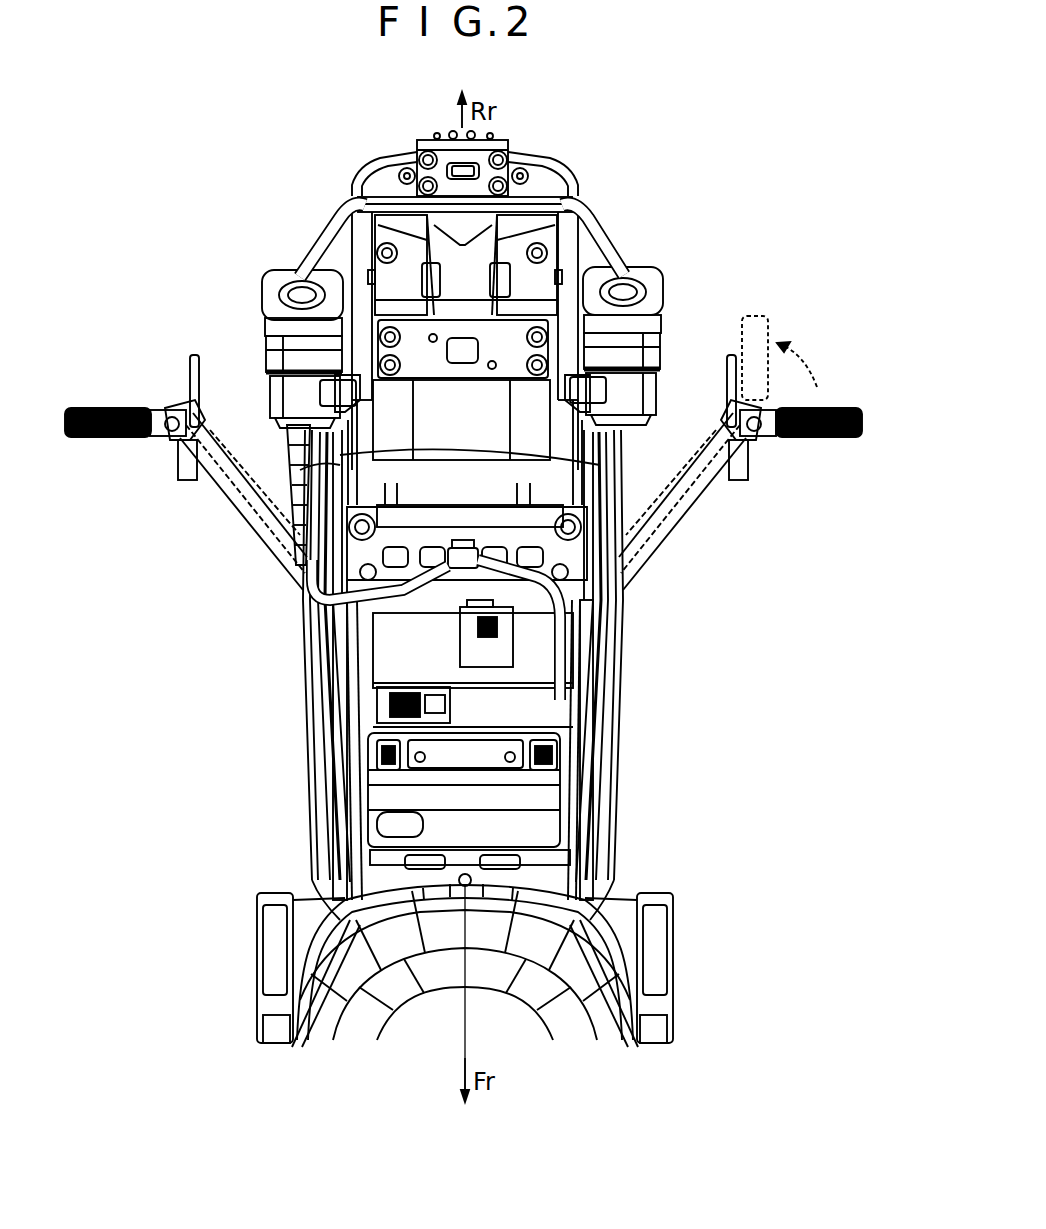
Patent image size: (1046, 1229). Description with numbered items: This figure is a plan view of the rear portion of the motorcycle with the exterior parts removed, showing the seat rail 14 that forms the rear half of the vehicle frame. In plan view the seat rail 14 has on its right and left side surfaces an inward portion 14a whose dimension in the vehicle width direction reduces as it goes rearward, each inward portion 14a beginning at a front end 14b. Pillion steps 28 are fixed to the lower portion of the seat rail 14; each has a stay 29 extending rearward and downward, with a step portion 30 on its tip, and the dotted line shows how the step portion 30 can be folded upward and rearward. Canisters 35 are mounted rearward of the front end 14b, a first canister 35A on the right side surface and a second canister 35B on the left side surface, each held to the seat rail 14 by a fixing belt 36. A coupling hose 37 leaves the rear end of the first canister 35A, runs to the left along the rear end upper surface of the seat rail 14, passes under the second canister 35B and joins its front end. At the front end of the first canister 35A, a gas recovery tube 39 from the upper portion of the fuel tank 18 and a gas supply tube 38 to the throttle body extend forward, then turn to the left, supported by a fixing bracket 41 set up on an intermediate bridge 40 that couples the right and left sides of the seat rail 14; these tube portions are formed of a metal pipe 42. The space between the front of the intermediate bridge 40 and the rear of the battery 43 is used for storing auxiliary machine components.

The seat rail 14 is at (318, 668).
The inward portion 14a is at (345, 457).
The front end 14b is at (335, 614).
The fuel tank 18 is at (598, 1018).
The pillion step 28 is at (100, 406).
The stay 29 is at (222, 490).
The step portion 30 is at (114, 440).
The canister 35 is at (478, 315).
The first canister 35A is at (275, 277).
The second canister 35B is at (650, 283).
The fixing belt 36 is at (270, 383).
The coupling hose 37 is at (318, 236).
The gas supply tube 38 is at (288, 445).
The gas recovery tube 39 is at (300, 470).
The intermediate bridge 40 is at (458, 540).
The fixing bracket 41 is at (470, 565).
The metal pipe 42 is at (405, 578).
The battery 43 is at (555, 768).